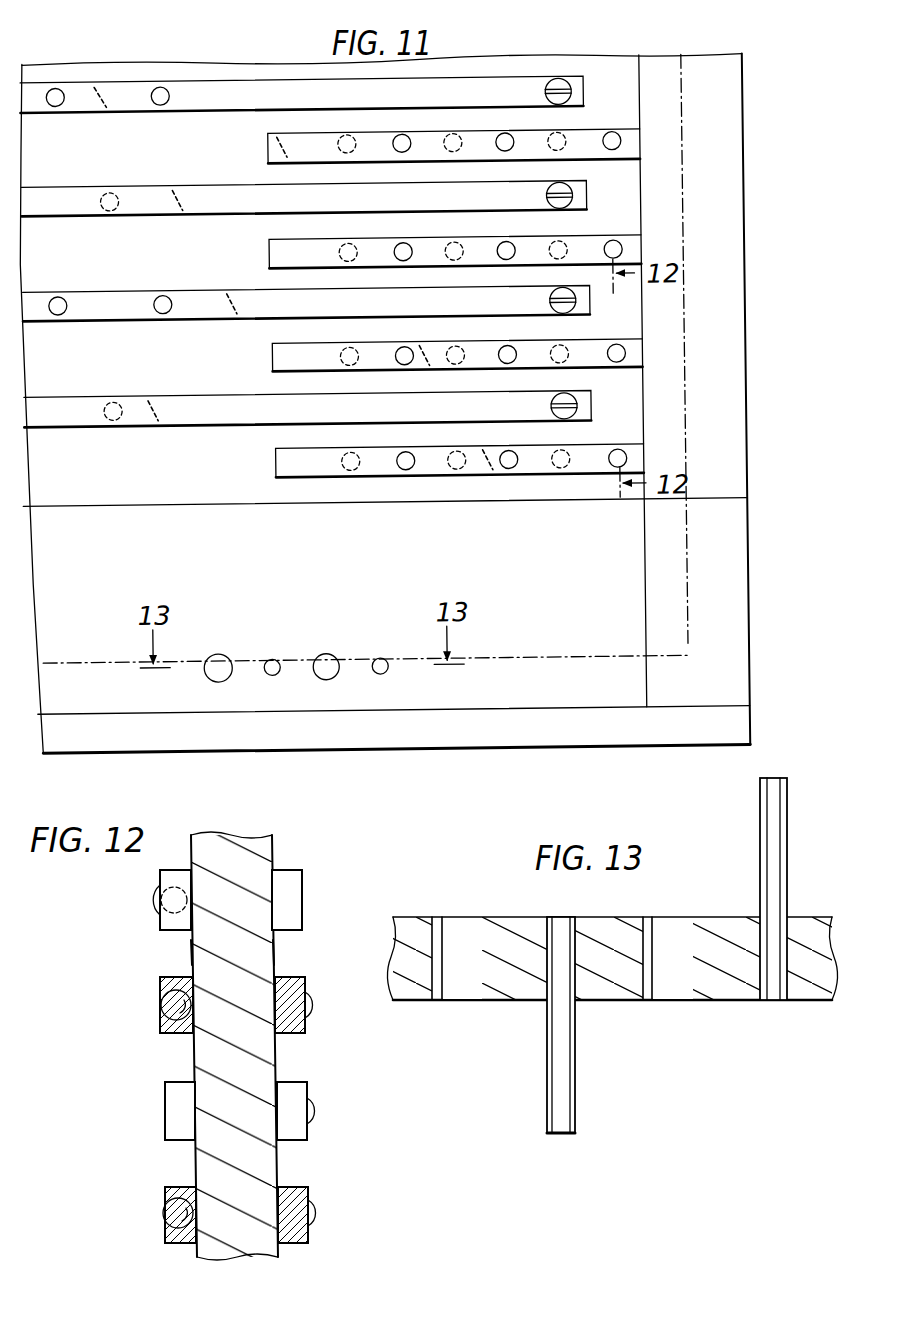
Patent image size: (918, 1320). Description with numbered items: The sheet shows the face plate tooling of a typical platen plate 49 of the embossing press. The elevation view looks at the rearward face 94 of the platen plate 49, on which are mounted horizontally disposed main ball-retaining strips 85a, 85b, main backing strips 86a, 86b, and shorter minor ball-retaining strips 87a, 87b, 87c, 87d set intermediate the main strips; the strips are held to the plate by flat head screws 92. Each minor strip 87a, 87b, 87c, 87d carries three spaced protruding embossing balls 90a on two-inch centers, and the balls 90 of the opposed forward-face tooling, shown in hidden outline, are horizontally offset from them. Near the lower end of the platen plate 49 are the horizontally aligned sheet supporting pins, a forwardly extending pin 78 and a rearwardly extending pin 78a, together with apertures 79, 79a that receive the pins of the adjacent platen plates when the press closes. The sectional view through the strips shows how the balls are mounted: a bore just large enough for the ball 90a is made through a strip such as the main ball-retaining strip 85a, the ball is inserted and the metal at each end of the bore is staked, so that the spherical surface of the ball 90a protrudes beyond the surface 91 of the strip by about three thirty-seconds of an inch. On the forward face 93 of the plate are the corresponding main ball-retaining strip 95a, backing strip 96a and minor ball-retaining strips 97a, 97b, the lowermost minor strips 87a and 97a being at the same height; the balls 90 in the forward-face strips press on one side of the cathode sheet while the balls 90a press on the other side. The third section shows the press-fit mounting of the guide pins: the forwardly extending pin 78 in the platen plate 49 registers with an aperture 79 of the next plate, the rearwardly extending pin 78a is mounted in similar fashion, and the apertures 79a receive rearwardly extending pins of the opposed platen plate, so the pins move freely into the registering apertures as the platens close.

In FIG. 11, the platen plate 49 is at (416, 751).
In FIG. 12, the platen plate 49 is at (225, 843).
In FIG. 13, the platen plate 49 is at (612, 992).
In FIG. 13, the forwardly extending pin 78 is at (768, 826).
In FIG. 11, the rearwardly extending pin 78a is at (379, 658).
In FIG. 13, the rearwardly extending pin 78a is at (558, 1066).
In FIG. 11, the aperture 79 is at (327, 653).
In FIG. 13, the aperture 79 is at (466, 928).
In FIG. 13, the aperture 79a is at (670, 925).
In FIG. 11, the main ball-retaining strip 85a is at (591, 305).
In FIG. 12, the main ball-retaining strip 85a is at (164, 878).
In FIG. 11, the main ball-retaining strip 85b is at (587, 94).
In FIG. 11, the main backing strip 86a is at (591, 410).
In FIG. 12, the main backing strip 86a is at (166, 1105).
In FIG. 11, the main backing strip 86b is at (589, 197).
In FIG. 11, the minor ball-retaining strip 87a is at (624, 462).
In FIG. 12, the minor ball-retaining strip 87a is at (170, 1190).
In FIG. 11, the minor ball-retaining strip 87b is at (624, 358).
In FIG. 12, the minor ball-retaining strip 87b is at (170, 985).
In FIG. 11, the minor ball-retaining strip 87c is at (622, 256).
In FIG. 11, the minor ball-retaining strip 87d is at (622, 148).
In FIG. 11, the embossing ball 90 is at (115, 192).
In FIG. 12, the embossing ball 90 is at (314, 1010).
In FIG. 11, the embossing ball 90a is at (165, 85).
In FIG. 12, the embossing ball 90a is at (157, 900).
In FIG. 12, the strip surface 91 is at (165, 930).
In FIG. 11, the flat head screw 92 is at (566, 84).
In FIG. 12, the forward face 93 is at (275, 952).
In FIG. 11, the rearward face 94 is at (518, 696).
In FIG. 12, the rearward face 94 is at (188, 952).
In FIG. 12, the main ball-retaining strip 95a is at (303, 1085).
In FIG. 12, the backing strip 96a is at (290, 884).
In FIG. 12, the minor ball-retaining strip 97a is at (310, 1190).
In FIG. 12, the minor ball-retaining strip 97b is at (313, 980).